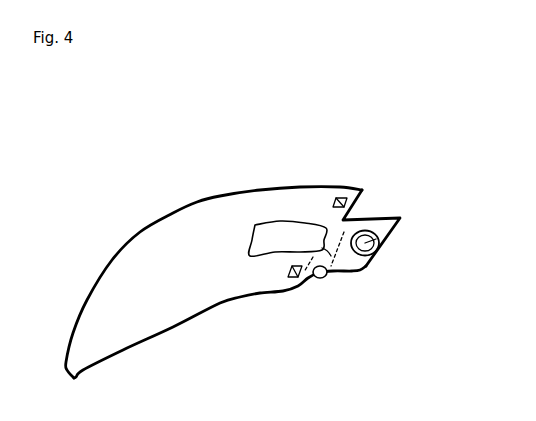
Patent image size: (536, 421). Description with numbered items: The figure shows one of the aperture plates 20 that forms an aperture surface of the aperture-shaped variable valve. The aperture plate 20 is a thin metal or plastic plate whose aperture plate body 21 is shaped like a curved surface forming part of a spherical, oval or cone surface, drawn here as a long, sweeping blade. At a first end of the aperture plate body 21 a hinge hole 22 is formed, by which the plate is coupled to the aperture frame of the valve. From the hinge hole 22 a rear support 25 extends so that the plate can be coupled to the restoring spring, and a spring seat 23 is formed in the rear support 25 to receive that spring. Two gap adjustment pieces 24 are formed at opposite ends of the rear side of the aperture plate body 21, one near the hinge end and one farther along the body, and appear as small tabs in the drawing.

The aperture plate 20 is at (137, 206).
The aperture plate body 21 is at (222, 205).
The hinge hole 22 is at (333, 271).
The spring seat 23 is at (390, 243).
The gap adjustment pieces 24 is at (328, 195).
The rear support 25 is at (400, 220).